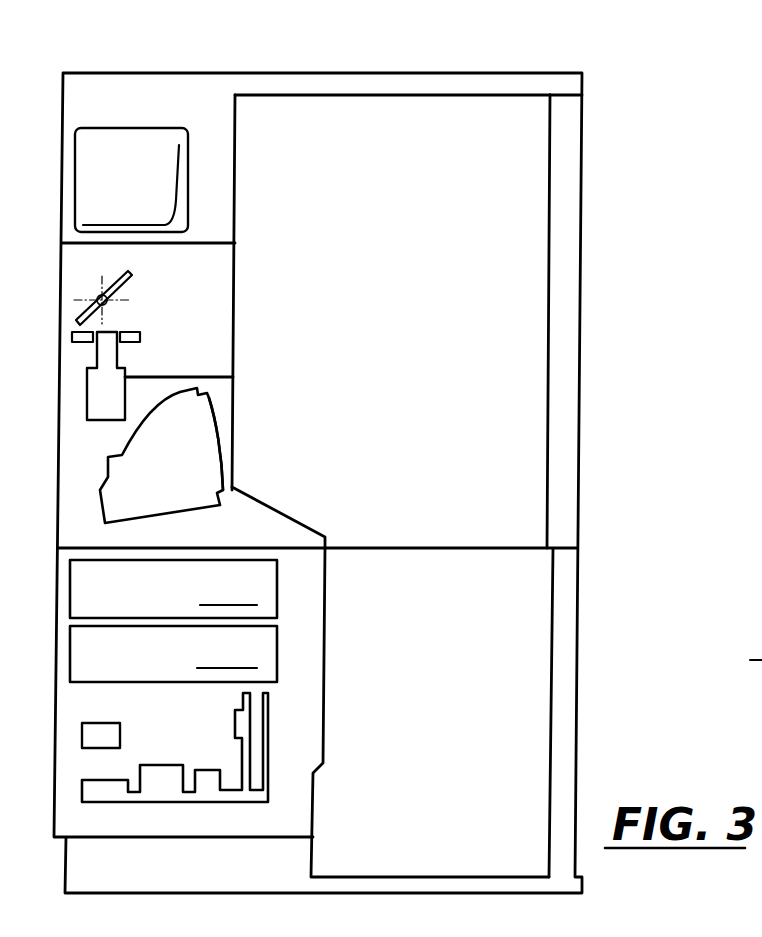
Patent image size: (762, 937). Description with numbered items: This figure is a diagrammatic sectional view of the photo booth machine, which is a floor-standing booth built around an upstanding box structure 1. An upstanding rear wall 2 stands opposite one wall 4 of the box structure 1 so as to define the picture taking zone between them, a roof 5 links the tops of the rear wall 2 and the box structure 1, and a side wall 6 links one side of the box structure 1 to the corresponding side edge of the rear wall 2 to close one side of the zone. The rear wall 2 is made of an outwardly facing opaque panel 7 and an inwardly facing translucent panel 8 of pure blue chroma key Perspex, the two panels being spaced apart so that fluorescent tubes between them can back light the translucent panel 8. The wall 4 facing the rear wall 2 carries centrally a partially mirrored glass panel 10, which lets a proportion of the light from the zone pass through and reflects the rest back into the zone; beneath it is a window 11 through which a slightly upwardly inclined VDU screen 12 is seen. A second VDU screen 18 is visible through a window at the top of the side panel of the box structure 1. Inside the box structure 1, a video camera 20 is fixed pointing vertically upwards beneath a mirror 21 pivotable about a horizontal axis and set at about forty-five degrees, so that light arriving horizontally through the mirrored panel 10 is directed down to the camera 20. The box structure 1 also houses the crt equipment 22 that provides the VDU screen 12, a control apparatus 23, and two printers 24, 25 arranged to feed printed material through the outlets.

The box structure 1 is at (240, 370).
The rear wall 2 is at (583, 277).
The wall 4 is at (233, 265).
The roof 5 is at (455, 95).
The side wall 6 is at (458, 535).
The opaque panel 7 is at (583, 332).
The translucent panel 8 is at (548, 400).
The glass panel 10 is at (237, 322).
The window 11 is at (233, 463).
The VDU screen 12 is at (220, 433).
The second VDU screen 18 is at (92, 197).
The video camera 20 is at (92, 398).
The mirror 21 is at (77, 323).
The crt equipment 22 is at (123, 497).
The control apparatus 23 is at (270, 742).
The printer 24 is at (280, 592).
The printer 25 is at (270, 656).